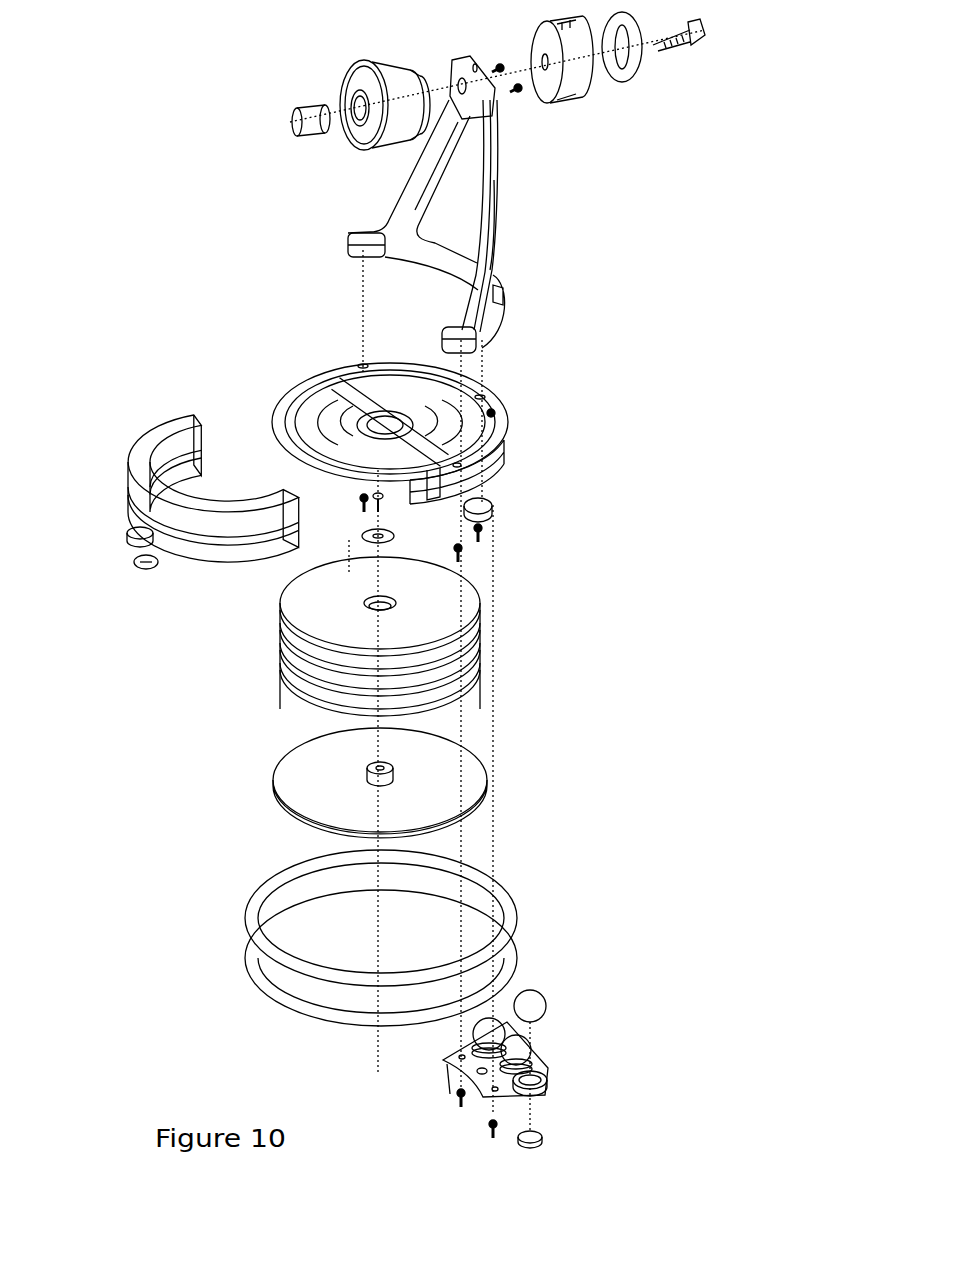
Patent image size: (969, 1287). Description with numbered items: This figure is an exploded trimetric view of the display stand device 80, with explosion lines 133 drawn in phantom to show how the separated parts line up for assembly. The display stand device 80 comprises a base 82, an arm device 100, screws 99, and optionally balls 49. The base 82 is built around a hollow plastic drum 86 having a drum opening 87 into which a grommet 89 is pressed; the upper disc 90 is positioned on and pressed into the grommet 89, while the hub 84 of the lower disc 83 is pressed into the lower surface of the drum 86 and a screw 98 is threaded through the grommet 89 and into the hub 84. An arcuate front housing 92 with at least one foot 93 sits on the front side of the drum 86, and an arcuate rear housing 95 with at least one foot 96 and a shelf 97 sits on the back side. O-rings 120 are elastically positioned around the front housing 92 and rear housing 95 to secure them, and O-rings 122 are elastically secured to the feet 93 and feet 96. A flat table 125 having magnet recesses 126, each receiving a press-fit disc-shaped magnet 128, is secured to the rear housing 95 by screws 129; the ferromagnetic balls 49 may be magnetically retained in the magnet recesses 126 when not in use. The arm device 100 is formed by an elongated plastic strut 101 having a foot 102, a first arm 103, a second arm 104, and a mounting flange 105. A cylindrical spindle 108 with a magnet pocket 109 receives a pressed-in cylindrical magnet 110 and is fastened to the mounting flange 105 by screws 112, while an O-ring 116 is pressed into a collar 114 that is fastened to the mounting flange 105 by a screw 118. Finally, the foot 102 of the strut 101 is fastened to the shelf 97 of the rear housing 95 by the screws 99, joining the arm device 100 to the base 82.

The ball 49 is at (498, 1028).
The display stand device 80 is at (183, 737).
The base 82 is at (535, 718).
The lower disc 83 is at (290, 805).
The hub 84 is at (396, 780).
The drum 86 is at (283, 655).
The drum opening 87 is at (398, 608).
The grommet 89 is at (362, 541).
The upper disc 90 is at (303, 395).
The front housing 92 is at (117, 440).
The foot 93 is at (127, 544).
The rear housing 95 is at (513, 458).
The foot 96 is at (488, 508).
The shelf 97 is at (495, 413).
The screw 98 is at (381, 510).
The screw 99 is at (358, 503).
The arm device 100 is at (557, 203).
The strut 101 is at (453, 287).
The foot 102 is at (362, 235).
The first arm 103 is at (502, 175).
The second arm 104 is at (402, 172).
The mounting flange 105 is at (452, 58).
The spindle 108 is at (357, 62).
The magnet pocket 109 is at (348, 100).
The magnet 110 is at (292, 128).
The screw 112 is at (520, 80).
The collar 114 is at (580, 105).
The O-ring 116 is at (642, 77).
The screw 118 is at (705, 42).
The O-ring 120 is at (245, 912).
The O-ring 122 is at (140, 574).
The table 125 is at (450, 1067).
The magnet recess 126 is at (540, 1082).
The magnet 128 is at (545, 1143).
The screw 129 is at (488, 1127).
The explosion line 133 is at (372, 1060).